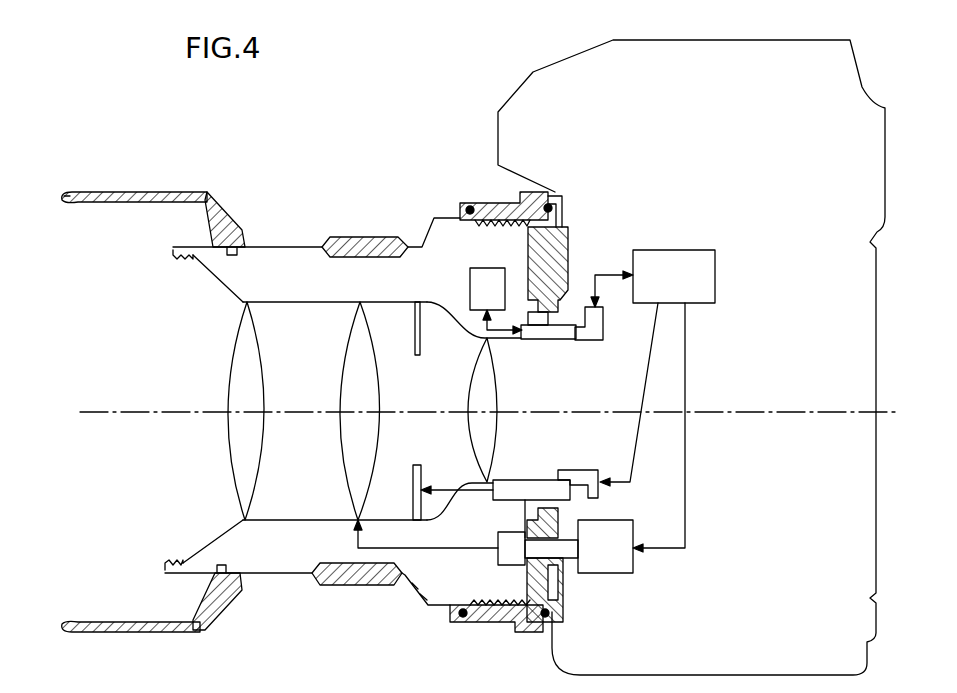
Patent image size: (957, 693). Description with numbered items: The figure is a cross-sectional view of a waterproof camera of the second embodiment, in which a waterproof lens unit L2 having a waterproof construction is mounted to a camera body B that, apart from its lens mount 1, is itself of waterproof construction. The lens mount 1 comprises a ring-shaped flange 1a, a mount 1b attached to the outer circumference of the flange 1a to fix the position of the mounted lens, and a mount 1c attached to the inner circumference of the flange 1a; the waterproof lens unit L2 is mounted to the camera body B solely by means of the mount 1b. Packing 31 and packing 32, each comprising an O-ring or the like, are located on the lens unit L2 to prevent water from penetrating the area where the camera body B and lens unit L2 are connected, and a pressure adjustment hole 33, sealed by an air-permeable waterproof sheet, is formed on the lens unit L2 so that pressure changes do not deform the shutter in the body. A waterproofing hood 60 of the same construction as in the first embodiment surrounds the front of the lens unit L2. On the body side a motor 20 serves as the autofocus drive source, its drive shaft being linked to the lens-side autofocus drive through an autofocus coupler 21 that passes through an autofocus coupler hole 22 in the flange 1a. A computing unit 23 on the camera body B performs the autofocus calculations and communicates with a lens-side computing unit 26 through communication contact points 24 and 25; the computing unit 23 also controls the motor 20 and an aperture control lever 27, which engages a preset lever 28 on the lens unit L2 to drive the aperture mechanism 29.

The camera body B is at (713, 116).
The waterproof lens unit L2 is at (336, 294).
The waterproofing hood 60 is at (162, 190).
The aperture mechanism 29 is at (422, 325).
The packing 32 is at (468, 205).
The pressure adjustment hole 33 is at (418, 585).
The packing 31 is at (552, 204).
The mount 1b is at (564, 221).
The lens mount 1 is at (562, 258).
The ring-shaped flange 1a is at (546, 272).
The mount 1c is at (550, 310).
The communication contact point 25 is at (563, 340).
The communication contact point 24 is at (600, 341).
The computing unit 26 is at (470, 285).
The computing unit 23 is at (715, 276).
The preset lever 28 is at (527, 490).
The aperture control lever 27 is at (583, 470).
The motor 20 is at (620, 557).
The autofocus coupler 21 is at (576, 559).
The autofocus coupler hole 22 is at (560, 612).